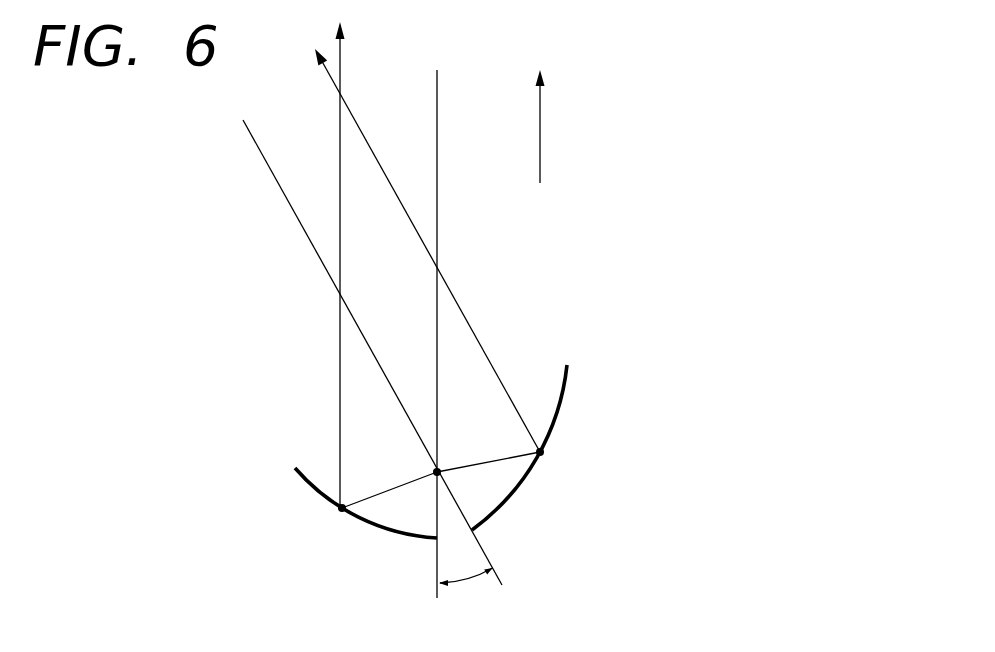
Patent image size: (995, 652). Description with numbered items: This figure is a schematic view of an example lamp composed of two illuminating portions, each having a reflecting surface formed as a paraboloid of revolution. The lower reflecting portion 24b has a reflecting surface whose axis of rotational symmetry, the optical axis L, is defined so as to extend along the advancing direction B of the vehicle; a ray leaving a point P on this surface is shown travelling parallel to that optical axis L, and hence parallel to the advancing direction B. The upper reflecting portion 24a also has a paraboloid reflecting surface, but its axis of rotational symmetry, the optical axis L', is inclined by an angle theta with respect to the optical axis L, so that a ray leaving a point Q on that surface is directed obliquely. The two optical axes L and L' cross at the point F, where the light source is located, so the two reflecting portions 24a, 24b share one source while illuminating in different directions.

The reflecting portion 24a is at (565, 385).
The reflecting portion 24b is at (390, 540).
The advancing direction B is at (689, 110).
The optical axis L is at (435, 335).
The optical axis L' is at (372, 360).
The point P is at (338, 512).
The point Q is at (545, 455).
The focal point F is at (446, 459).